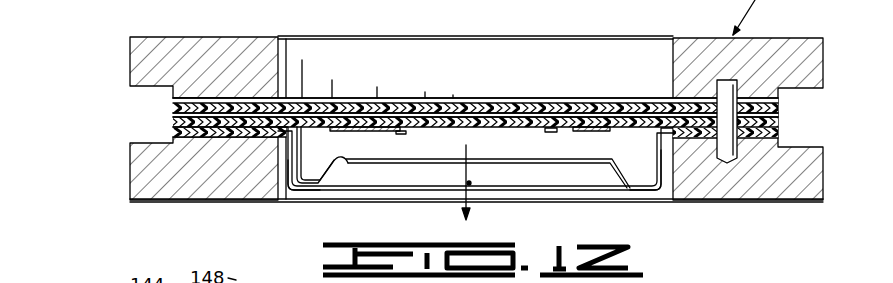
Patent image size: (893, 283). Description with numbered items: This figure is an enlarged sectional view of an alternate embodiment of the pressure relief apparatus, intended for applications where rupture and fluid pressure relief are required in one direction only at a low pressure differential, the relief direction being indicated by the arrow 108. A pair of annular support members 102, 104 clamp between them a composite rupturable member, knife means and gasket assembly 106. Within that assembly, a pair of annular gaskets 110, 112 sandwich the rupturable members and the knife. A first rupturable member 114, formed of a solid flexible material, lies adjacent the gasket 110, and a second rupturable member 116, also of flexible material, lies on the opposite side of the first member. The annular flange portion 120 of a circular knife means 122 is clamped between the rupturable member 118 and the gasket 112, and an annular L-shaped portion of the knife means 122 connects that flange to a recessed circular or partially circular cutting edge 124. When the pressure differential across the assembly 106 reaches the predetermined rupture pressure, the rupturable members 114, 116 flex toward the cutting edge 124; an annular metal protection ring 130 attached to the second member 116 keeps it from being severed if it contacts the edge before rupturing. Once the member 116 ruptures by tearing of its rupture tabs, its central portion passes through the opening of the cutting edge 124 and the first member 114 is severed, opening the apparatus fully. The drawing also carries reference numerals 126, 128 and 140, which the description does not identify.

The annular support member 102 is at (200, 190).
The annular support member 104 is at (199, 36).
The composite rupturable member, knife means and gasket assembly 106 is at (407, 97).
The arrow 108 is at (470, 183).
The annular gasket 110 is at (172, 100).
The annular gasket 112 is at (172, 133).
The first rupturable member 114 is at (172, 107).
The second rupturable member 116 is at (172, 116).
The rupturable member 118 is at (172, 124).
The annular flange portion 120 is at (267, 124).
The knife means 122 is at (300, 193).
The cutting edge 124 is at (348, 188).
The outer tray 126 is at (292, 152).
The tray right wall 128 is at (638, 190).
The annular metal protection ring 130 is at (370, 128).
The locating pin 140 is at (752, 282).